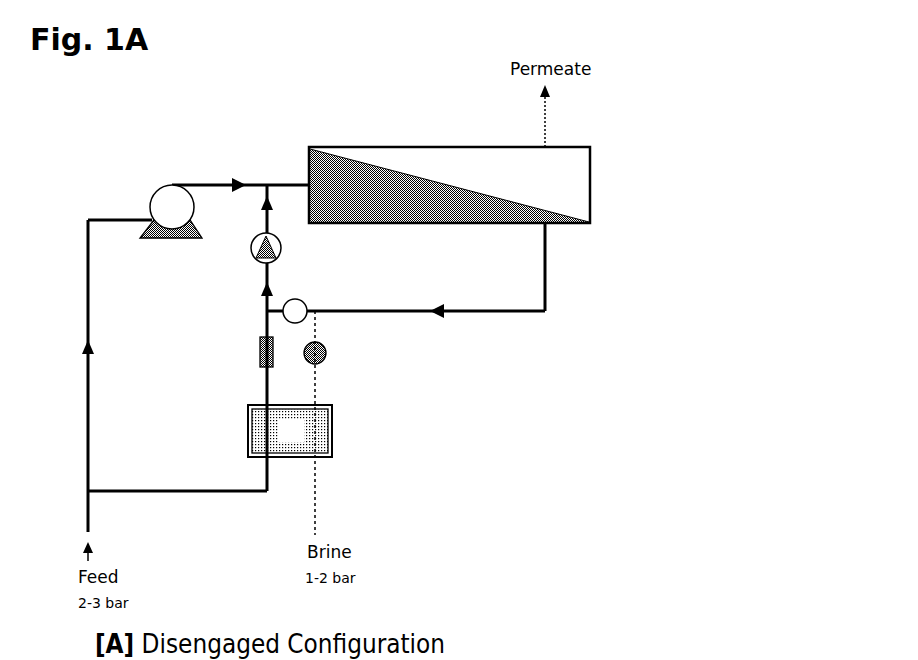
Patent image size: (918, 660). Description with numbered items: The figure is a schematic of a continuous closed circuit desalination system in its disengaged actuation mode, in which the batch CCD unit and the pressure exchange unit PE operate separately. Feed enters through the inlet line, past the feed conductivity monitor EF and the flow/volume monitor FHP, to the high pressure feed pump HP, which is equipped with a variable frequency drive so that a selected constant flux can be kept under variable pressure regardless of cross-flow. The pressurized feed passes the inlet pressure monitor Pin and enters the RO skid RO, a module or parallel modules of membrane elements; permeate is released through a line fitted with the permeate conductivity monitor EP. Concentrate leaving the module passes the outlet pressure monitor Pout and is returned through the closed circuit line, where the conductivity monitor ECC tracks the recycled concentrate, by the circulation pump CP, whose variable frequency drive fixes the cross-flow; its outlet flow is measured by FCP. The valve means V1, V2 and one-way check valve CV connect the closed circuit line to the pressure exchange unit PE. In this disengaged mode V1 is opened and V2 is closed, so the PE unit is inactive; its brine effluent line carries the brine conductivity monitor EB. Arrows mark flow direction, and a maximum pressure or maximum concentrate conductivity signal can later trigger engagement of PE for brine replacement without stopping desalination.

The RO skid RO is at (449, 172).
The high pressure feed pump HP is at (171, 225).
The circulation pump CP is at (286, 248).
The valve means V1 is at (295, 302).
The valve means V2 is at (326, 423).
The one-way check valve CV is at (250, 352).
The pressure exchange unit PE is at (290, 431).
The inlet pressure monitoring means Pin is at (282, 176).
The outlet pressure monitoring means Pout is at (574, 244).
The feed electric-conductivity monitoring means EF is at (104, 208).
The HP flow/volume monitoring means FHP is at (127, 208).
The CP flow/volume monitoring means FCP is at (258, 220).
The closed circuit electric-conductivity monitoring means ECC is at (392, 300).
The permeate electric-conductivity monitoring means EP is at (572, 122).
The brine electric-conductivity monitoring means EB is at (340, 491).